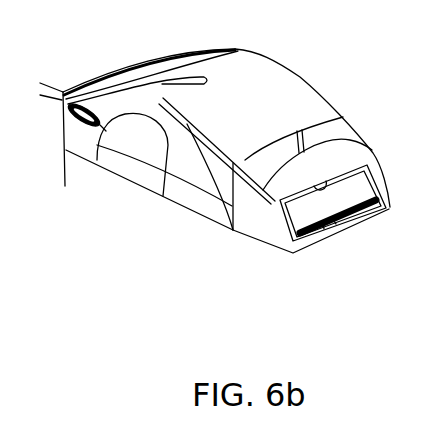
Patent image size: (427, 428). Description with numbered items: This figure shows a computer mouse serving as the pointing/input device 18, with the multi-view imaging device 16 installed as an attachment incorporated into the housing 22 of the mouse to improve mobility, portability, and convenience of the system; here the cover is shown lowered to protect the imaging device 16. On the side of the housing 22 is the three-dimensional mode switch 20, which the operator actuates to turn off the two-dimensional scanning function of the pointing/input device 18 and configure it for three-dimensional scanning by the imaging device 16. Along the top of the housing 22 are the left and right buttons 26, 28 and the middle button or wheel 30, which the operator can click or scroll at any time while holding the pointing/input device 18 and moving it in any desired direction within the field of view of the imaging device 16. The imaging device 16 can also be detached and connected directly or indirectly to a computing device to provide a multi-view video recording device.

The pointing/input device 18 is at (322, 52).
The housing 22 is at (316, 98).
The right button 28 is at (176, 56).
The middle button or wheel 30 is at (118, 73).
The left button 26 is at (112, 82).
The 3D mode switch 20 is at (75, 123).
The multi-view imaging device 16 is at (263, 213).